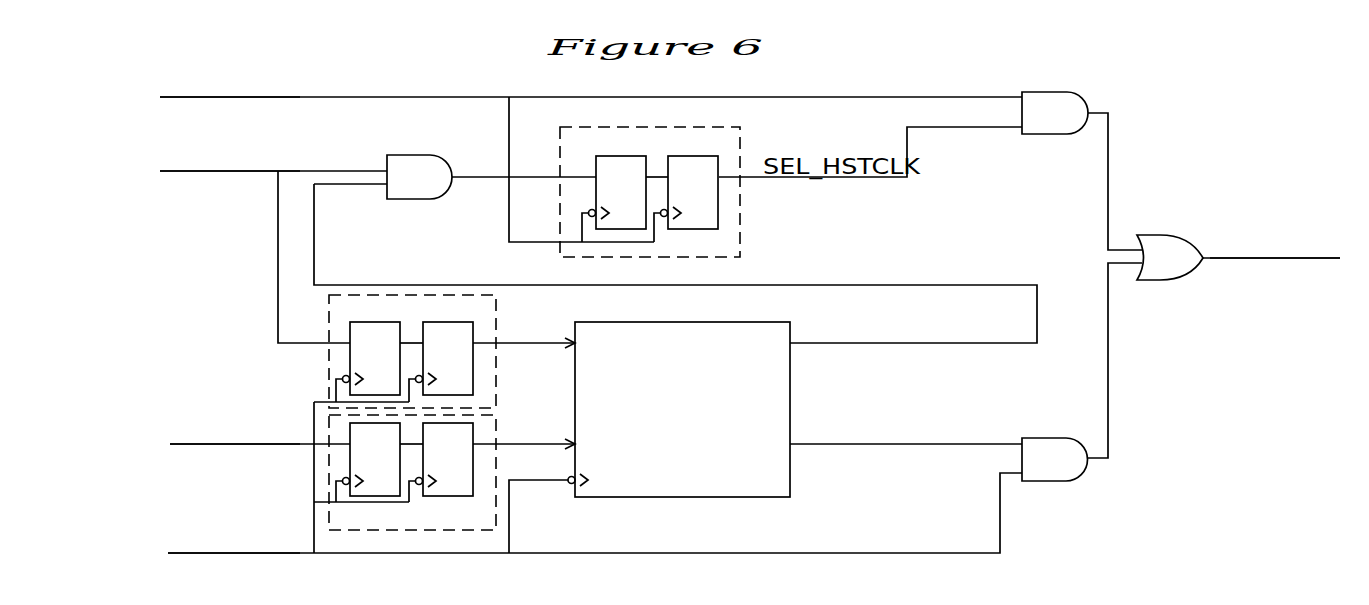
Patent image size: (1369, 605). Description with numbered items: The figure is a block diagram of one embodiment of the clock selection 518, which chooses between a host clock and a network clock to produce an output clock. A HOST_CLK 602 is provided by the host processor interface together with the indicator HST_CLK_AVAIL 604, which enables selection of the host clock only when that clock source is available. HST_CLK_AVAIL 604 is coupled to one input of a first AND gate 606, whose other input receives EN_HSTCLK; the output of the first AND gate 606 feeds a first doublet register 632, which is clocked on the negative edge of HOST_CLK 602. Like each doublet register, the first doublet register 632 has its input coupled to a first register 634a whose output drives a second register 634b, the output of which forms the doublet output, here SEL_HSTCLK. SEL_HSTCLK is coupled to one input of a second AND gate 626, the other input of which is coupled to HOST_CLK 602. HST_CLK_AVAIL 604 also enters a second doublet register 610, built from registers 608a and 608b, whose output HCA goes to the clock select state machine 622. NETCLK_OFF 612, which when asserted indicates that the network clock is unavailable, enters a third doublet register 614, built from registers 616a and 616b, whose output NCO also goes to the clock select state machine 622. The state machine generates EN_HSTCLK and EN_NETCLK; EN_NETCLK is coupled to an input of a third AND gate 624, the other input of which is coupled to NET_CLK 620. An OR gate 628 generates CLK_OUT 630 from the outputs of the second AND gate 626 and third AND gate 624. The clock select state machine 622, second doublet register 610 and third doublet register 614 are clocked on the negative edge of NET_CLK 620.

The clock selection 518 is at (885, 62).
The HOST_CLK 602 is at (230, 70).
The HST_CLK_AVAIL 604 is at (260, 146).
The first AND gate 606 is at (419, 163).
The first register 608a is at (368, 347).
The second register 608b is at (446, 347).
The second doublet register 610 is at (329, 380).
The NETCLK_OFF 612 is at (212, 431).
The third doublet register 614 is at (326, 468).
The first register 616a is at (368, 477).
The second register 616b is at (446, 477).
The NET_CLK 620 is at (227, 525).
The clock select state machine 622 is at (732, 395).
The third AND gate 624 is at (1055, 446).
The second AND gate 626 is at (1055, 99).
The OR gate 628 is at (1170, 245).
The CLK_OUT 630 is at (1275, 230).
The first doublet register 632 is at (636, 181).
The first register 634a is at (614, 187).
The second register 634b is at (693, 187).